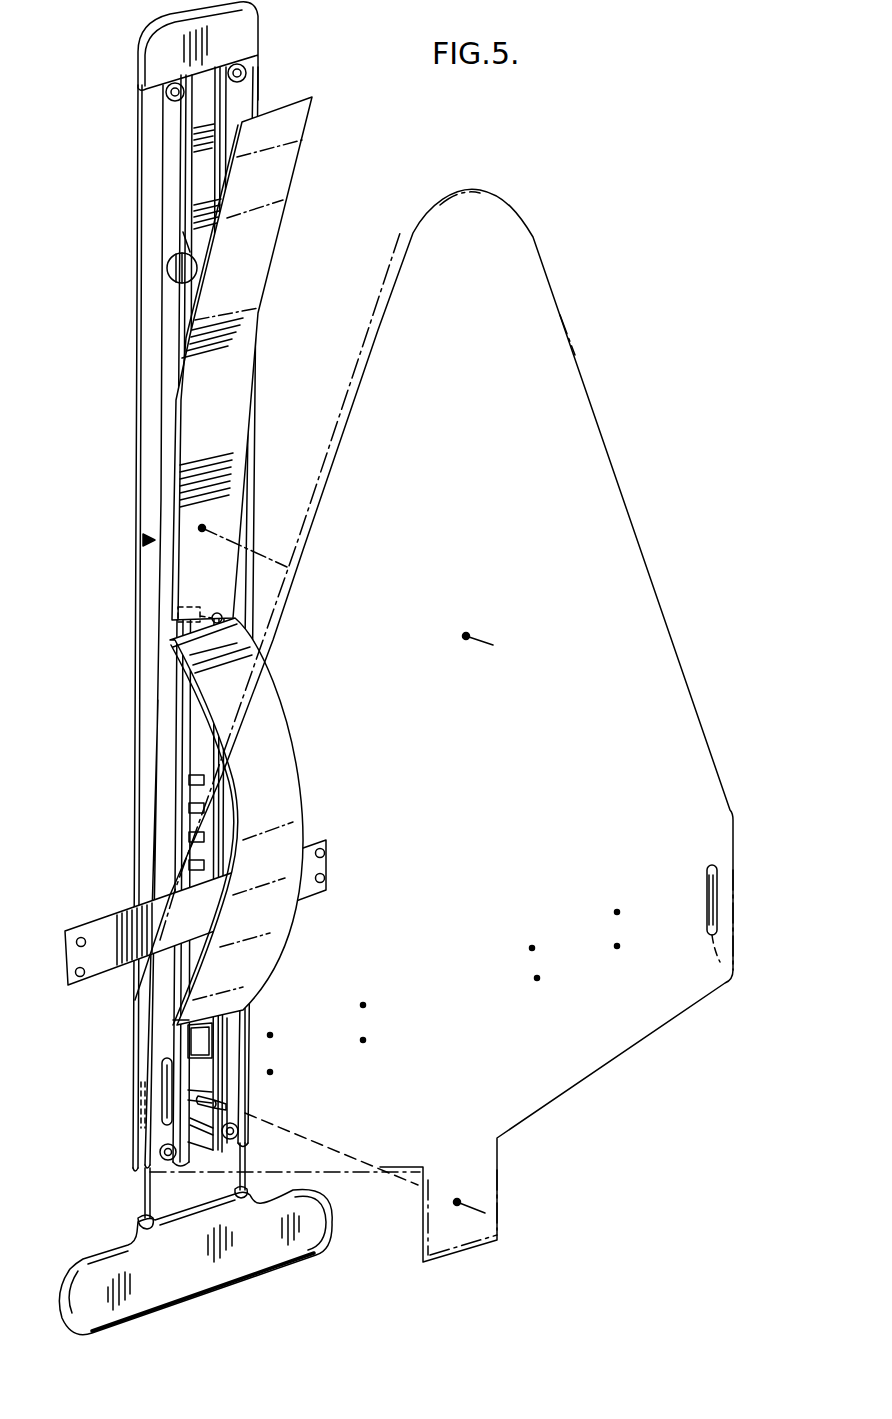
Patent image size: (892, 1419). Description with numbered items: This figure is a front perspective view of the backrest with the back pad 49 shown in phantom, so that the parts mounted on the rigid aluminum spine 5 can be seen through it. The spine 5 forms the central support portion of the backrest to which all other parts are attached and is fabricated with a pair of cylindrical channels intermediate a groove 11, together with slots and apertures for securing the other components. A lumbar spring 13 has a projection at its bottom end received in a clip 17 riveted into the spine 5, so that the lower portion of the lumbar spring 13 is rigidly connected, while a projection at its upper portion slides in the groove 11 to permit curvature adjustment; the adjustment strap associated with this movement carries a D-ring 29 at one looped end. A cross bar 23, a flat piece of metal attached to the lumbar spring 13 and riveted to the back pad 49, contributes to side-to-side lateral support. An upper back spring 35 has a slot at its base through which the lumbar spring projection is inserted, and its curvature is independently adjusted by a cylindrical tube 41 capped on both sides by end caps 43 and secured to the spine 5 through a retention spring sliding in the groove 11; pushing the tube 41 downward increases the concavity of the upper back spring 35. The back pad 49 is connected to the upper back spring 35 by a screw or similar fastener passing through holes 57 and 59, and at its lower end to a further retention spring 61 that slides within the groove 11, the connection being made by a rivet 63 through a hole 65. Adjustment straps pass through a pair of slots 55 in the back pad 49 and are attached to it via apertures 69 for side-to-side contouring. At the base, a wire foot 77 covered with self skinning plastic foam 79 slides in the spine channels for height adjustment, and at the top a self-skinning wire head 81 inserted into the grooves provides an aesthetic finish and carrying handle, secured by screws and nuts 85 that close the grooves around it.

The spine 5 is at (155, 540).
The groove 11 is at (195, 1068).
The lumbar spring 13 is at (202, 650).
The clip 17 is at (197, 1039).
The cross bar 23 is at (110, 925).
The D-ring 29 is at (222, 612).
The upper back spring 35 is at (247, 257).
The cylindrical tube 41 is at (188, 250).
The end caps 43 is at (167, 274).
The back pad 49 is at (680, 699).
The slots 55 is at (718, 968).
The hole 57 is at (202, 528).
The hole 59 is at (466, 636).
The retention spring 61 is at (179, 1118).
The rivet 63 is at (216, 1100).
The hole 65 is at (457, 1202).
The apertures 69 is at (617, 946).
The wire foot 77 is at (140, 1190).
The self skinning plastic foam 79 is at (305, 1245).
The wire head 81 is at (247, 32).
The nuts 85 is at (184, 97).